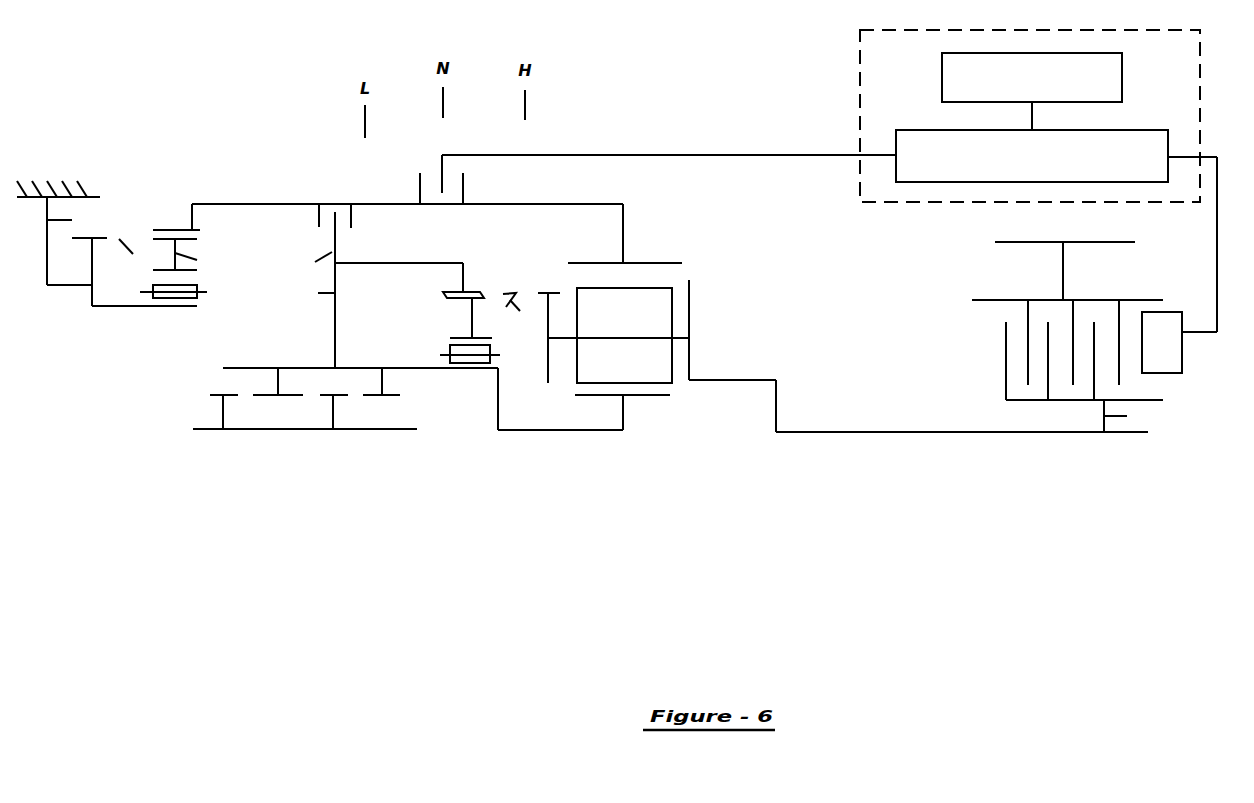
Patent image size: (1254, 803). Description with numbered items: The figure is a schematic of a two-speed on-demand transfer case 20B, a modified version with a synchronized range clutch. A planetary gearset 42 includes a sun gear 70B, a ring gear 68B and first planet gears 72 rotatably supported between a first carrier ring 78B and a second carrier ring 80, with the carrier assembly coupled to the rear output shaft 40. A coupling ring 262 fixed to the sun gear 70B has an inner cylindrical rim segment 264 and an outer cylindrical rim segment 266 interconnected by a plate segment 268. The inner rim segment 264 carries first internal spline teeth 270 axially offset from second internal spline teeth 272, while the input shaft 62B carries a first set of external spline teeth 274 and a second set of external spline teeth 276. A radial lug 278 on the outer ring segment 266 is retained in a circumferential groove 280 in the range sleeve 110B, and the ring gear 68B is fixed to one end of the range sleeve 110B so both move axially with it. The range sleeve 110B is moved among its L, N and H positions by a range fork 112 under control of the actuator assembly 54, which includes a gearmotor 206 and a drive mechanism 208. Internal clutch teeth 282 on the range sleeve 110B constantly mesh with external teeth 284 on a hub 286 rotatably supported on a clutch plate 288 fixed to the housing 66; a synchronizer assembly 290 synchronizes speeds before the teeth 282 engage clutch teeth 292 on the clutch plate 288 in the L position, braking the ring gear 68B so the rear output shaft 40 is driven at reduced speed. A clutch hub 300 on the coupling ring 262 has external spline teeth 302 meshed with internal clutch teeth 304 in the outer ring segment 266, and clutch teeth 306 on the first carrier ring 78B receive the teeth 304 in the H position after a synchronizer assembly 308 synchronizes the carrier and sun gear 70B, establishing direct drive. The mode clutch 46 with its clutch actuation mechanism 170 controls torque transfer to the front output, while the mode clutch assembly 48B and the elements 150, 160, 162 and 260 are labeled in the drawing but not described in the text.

The transfer case 20B is at (428, 493).
The rear output shaft 40 is at (905, 432).
The planetary gearset 42 is at (702, 252).
The mode clutch 46 is at (1178, 213).
The switch assembly 48B is at (655, 410).
The actuator assembly 54 is at (1185, 70).
The input shaft 62B is at (254, 430).
The housing 66 is at (58, 233).
The ring gear 68B is at (642, 263).
The sun gear 70B is at (623, 403).
The first planet gears 72 is at (614, 328).
The first carrier ring 78B is at (546, 360).
The conductor 80 is at (690, 364).
The range sleeve 110B is at (255, 200).
The range fork 112 is at (440, 168).
The plate 150 is at (1003, 278).
The plate 160 is at (1084, 377).
The plate 162 is at (992, 298).
The clutch actuation mechanism 170 is at (1175, 357).
The gearmotor 206 is at (942, 72).
The drive mechanism 208 is at (1125, 130).
The power supply circuit 260 is at (260, 308).
The coupling ring 262 is at (492, 381).
The inner cylindrical rim segment 264 is at (318, 366).
The outer cylindrical rim segment 266 is at (362, 263).
The plate segment 268 is at (298, 292).
The first internal spline teeth 270 is at (288, 395).
The second internal spline teeth 272 is at (392, 395).
The first set of external spline teeth 274 is at (216, 395).
The second set of external spline teeth 276 is at (322, 396).
The radial lug 278 is at (307, 264).
The circumferential groove 280 is at (325, 228).
The internal clutch teeth 282 is at (213, 230).
The external teeth 284 is at (190, 236).
The hub 286 is at (201, 264).
The clutch plate 288 is at (151, 272).
The synchronizer assembly 290 is at (133, 239).
The clutch teeth 292 is at (75, 238).
The clutch hub 300 is at (470, 312).
The external spline teeth 302 is at (443, 295).
The internal clutch teeth 304 is at (483, 297).
The clutch teeth 306 is at (538, 293).
The synchronizer assembly 308 is at (517, 315).